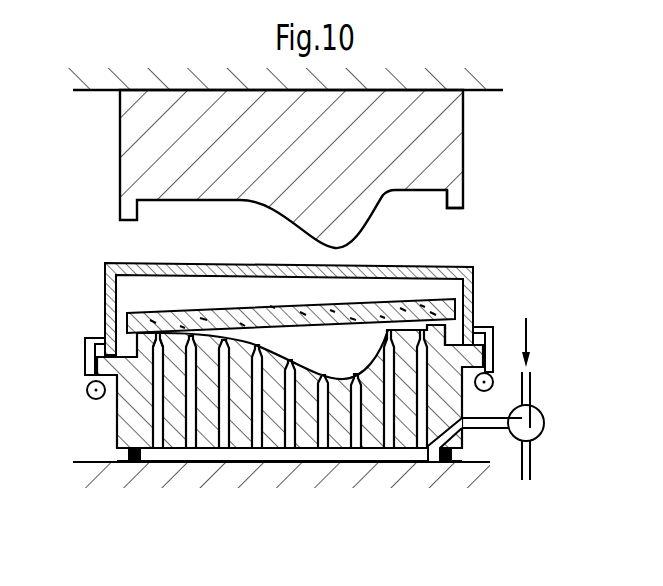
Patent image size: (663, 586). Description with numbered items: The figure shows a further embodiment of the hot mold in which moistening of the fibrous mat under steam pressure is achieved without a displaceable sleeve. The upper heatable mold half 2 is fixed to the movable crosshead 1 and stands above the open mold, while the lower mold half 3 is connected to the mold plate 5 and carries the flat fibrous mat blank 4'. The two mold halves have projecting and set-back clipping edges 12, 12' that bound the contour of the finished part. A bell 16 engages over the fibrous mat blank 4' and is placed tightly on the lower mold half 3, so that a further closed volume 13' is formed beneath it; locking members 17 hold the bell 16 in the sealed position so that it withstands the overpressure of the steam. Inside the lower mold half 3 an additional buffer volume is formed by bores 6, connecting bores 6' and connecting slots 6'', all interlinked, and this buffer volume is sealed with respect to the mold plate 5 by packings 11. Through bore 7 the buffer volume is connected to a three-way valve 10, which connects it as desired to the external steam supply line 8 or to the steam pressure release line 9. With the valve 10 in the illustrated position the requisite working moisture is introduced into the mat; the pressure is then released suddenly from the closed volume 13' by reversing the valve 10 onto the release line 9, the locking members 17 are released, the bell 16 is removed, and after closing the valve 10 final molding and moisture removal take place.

The movable crosshead 1 is at (85, 78).
The upper heatable mold half 2 is at (130, 140).
The lower mold half 3 is at (125, 422).
The fibrous mat blank 4' is at (263, 306).
The mold plate 5 is at (95, 472).
The bores 6 is at (248, 473).
The connecting bores 6' is at (169, 313).
The connecting slots 6'' is at (330, 503).
The bore 7 is at (486, 422).
The external steam supply line 8 is at (532, 385).
The steam pressure release line 9 is at (533, 462).
The three-way valve 10 is at (540, 418).
The packings 11 is at (137, 464).
The clipping edge 12 is at (432, 207).
The clipping edge 12' is at (485, 337).
The closed volume 13' is at (251, 283).
The bell 16 is at (138, 265).
The locking members 17 is at (93, 362).